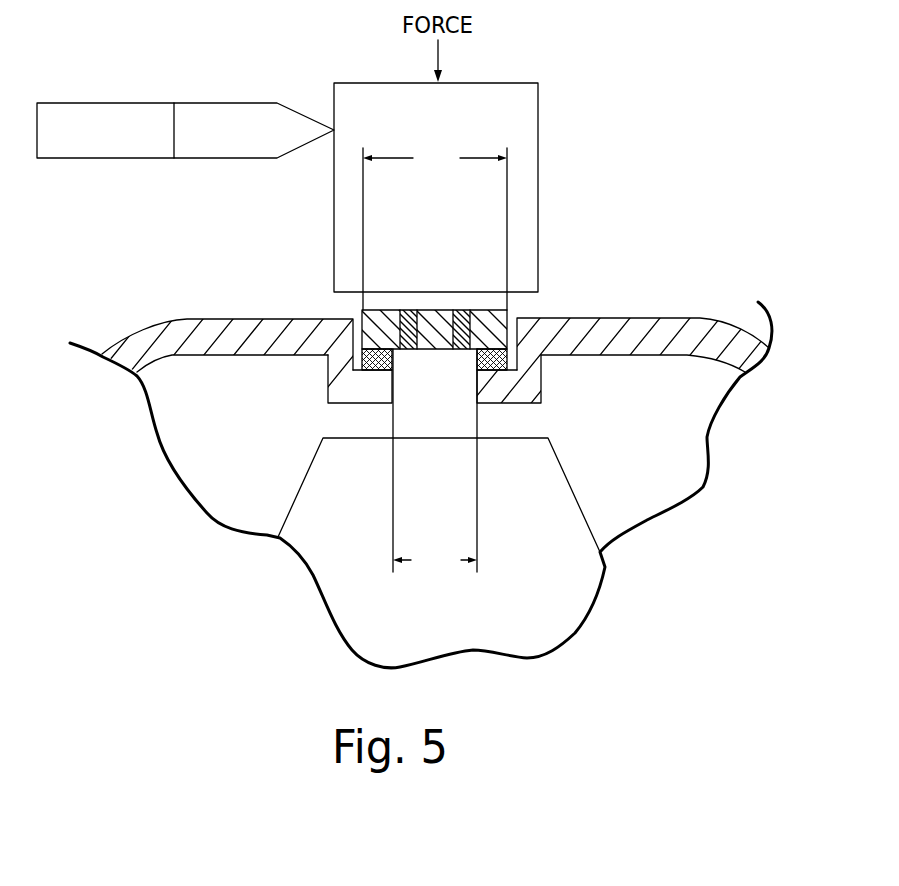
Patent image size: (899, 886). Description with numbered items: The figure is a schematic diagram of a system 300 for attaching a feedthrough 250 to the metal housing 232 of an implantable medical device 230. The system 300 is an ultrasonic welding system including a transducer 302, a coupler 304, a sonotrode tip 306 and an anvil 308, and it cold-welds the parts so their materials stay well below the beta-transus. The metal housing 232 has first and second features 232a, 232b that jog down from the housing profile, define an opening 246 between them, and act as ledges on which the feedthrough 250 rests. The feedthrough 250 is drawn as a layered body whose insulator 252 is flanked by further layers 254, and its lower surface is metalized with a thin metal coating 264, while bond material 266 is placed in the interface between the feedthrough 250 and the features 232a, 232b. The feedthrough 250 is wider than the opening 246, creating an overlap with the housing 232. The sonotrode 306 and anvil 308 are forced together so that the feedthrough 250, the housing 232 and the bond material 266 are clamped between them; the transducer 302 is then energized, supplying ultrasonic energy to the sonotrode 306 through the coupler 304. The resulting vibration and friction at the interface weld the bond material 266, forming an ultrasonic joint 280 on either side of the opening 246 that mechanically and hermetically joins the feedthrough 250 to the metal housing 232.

The implantable medical device 230 is at (92, 312).
The metal housing 232 is at (163, 320).
The first feature 232a is at (382, 404).
The second feature 232b is at (500, 405).
The opening 246 is at (446, 435).
The feedthrough 250 is at (520, 307).
The insulator 252 is at (358, 309).
The intermediate layer of bump 254 is at (465, 310).
The metal coating 264 is at (465, 355).
The bond material 266 is at (412, 357).
The ultrasonic joint 280 is at (352, 354).
The system 300 is at (565, 76).
The transducer 302 is at (76, 103).
The coupler 304 is at (195, 103).
The sonotrode tip 306 is at (538, 152).
The anvil 308 is at (568, 470).